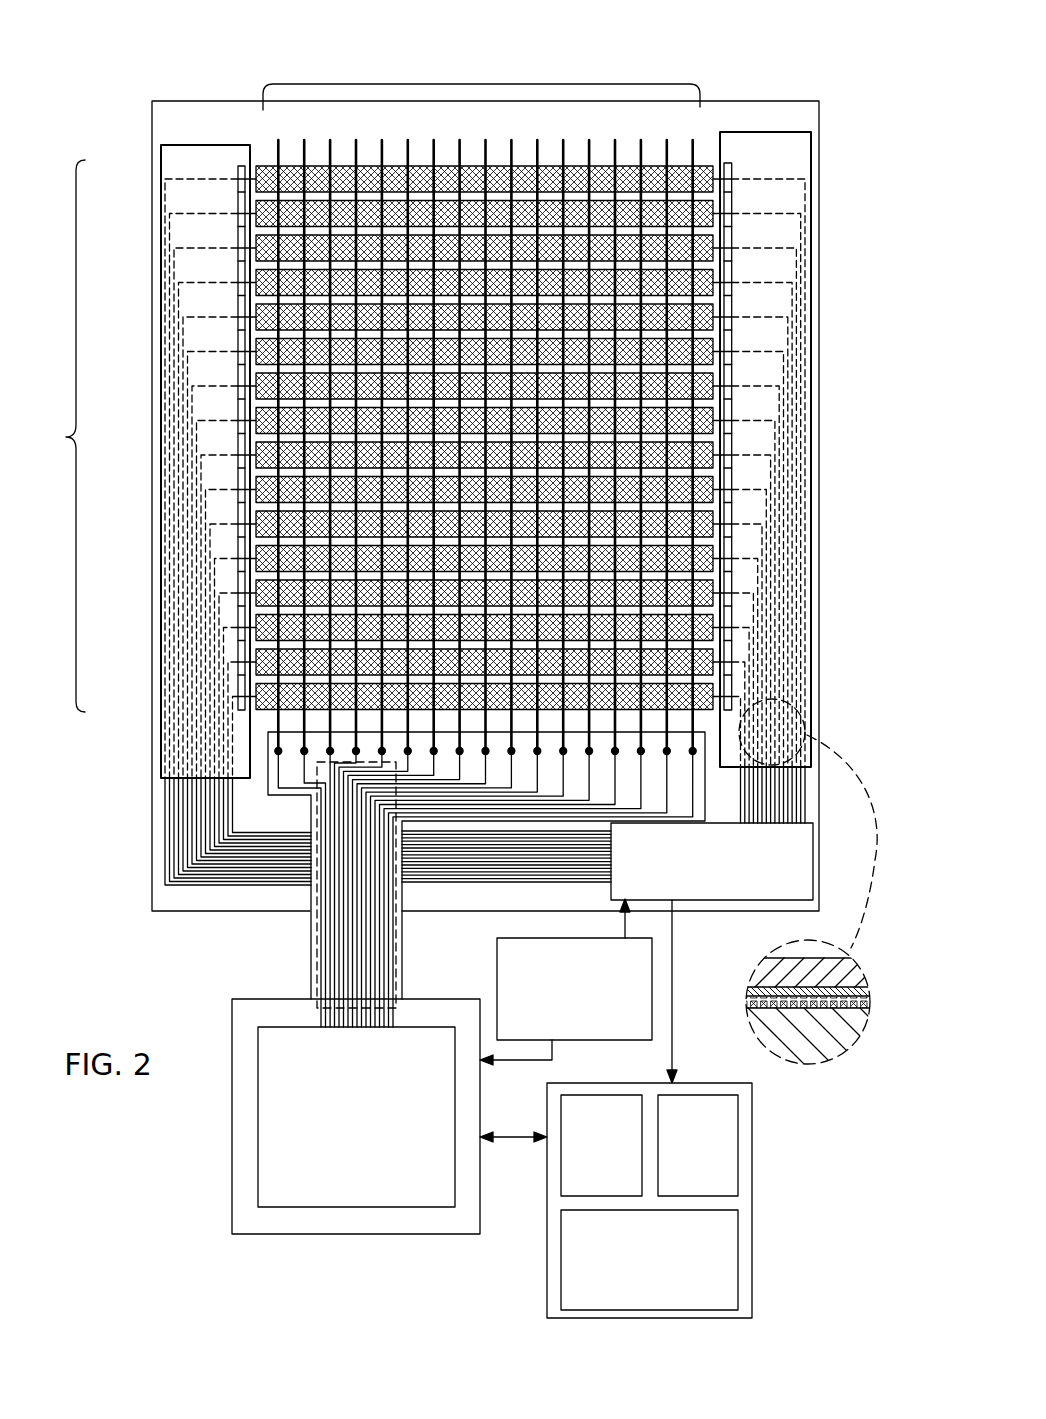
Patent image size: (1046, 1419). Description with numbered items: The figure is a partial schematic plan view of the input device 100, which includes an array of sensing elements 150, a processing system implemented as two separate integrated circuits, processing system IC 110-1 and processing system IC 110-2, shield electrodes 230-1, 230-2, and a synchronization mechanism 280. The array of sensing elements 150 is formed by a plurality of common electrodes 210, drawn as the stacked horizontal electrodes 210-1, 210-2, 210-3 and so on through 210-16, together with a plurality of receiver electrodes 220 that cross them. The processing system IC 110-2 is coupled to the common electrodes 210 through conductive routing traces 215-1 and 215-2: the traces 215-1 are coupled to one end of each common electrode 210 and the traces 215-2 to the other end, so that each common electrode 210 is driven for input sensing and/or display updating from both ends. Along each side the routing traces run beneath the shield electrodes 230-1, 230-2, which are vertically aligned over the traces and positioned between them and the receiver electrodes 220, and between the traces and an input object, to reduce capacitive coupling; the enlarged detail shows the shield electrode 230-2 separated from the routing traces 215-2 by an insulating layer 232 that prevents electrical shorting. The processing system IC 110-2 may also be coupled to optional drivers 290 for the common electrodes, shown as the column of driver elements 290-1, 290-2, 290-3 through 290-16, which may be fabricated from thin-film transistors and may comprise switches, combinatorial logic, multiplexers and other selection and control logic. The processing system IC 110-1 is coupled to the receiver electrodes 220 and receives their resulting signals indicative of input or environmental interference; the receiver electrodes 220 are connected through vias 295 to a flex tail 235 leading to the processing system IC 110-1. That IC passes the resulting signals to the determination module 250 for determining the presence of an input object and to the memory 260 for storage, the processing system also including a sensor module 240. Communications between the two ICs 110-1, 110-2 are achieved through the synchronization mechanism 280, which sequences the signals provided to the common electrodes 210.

The input device 100 is at (222, 66).
The processing system IC 110-1 is at (383, 1172).
The processing system IC 110-2 is at (789, 870).
The array of sensing elements 150 is at (342, 150).
The common electrodes 210 is at (383, 442).
The common electrode 210-1 is at (248, 165).
The common electrode 210-2 is at (245, 214).
The common electrode 210-3 is at (245, 272).
The sensor electrode row 16 210-16 is at (236, 704).
The conductive routing traces 215-1 is at (200, 838).
The conductive routing traces 215-2 is at (790, 636).
The receiver electrodes 220 is at (484, 84).
The shield electrode 230-1 is at (248, 640).
The shield electrode 230-2 is at (777, 130).
The insulating layer 232 is at (760, 995).
The flex cable 235 is at (317, 941).
The sensor module 240 is at (619, 1182).
The determination module 250 is at (668, 1293).
The memory 260 is at (716, 1165).
The synchronization mechanism 280 is at (593, 1023).
The drivers 290 is at (245, 158).
The connection pad 1 290-1 is at (238, 178).
The connection pad 2 290-2 is at (238, 213).
The connection pad 3 290-3 is at (238, 249).
The connection pad 16 290-16 is at (238, 678).
The vias 295 is at (279, 756).